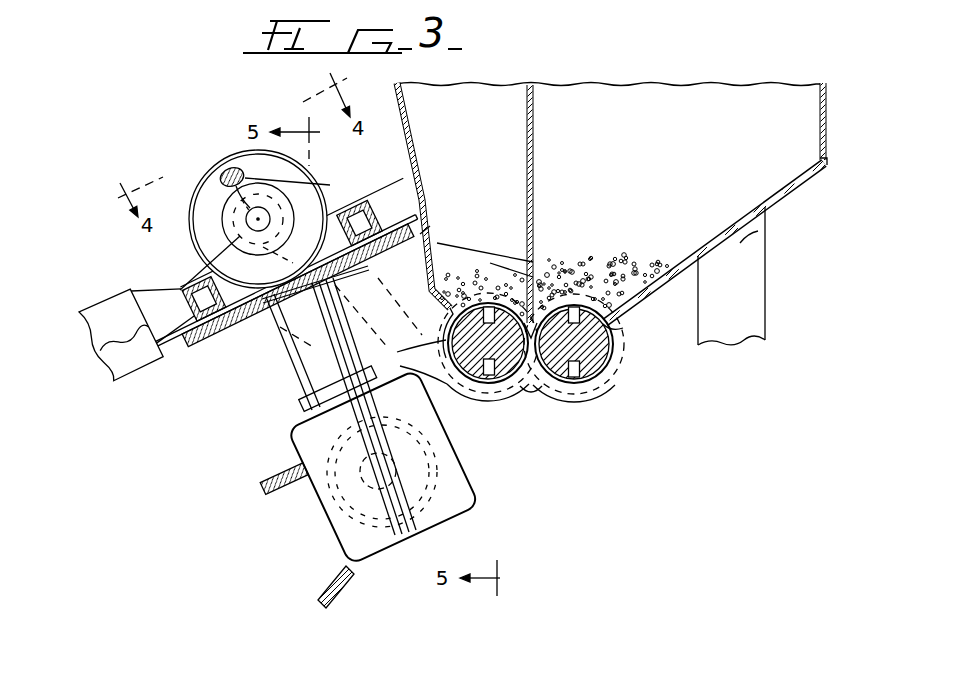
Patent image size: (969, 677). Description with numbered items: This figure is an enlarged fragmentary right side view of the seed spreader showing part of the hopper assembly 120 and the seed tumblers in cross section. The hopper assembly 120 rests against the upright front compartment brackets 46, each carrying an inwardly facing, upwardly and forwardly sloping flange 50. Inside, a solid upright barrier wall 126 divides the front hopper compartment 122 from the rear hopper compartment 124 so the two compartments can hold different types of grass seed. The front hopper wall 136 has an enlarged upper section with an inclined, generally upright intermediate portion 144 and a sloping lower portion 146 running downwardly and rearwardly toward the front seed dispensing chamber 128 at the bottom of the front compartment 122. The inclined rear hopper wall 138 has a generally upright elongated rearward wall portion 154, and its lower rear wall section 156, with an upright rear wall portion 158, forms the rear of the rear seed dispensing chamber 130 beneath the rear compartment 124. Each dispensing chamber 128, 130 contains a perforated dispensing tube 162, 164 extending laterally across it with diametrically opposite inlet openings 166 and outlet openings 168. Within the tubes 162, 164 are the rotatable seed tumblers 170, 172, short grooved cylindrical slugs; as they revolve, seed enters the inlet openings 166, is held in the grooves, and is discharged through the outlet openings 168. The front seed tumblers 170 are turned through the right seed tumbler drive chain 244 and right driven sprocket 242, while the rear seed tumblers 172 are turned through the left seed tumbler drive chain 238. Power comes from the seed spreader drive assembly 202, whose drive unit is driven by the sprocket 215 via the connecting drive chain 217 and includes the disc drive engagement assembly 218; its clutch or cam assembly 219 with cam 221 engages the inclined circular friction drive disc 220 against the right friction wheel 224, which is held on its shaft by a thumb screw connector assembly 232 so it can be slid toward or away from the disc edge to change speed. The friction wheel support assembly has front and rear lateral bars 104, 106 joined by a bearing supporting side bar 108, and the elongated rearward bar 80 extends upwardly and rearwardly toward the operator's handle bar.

The front hopper compartment 122 is at (586, 95).
The rear hopper compartment 124 is at (466, 96).
The rear hopper wall 138 is at (406, 161).
The barrier wall 126 is at (540, 167).
The intermediate portion 144 is at (819, 118).
The front hopper wall 136 is at (828, 164).
The hopper assembly 120 is at (806, 175).
The flange 50 is at (745, 238).
The front compartment bracket 46 is at (767, 283).
The sloping lower portion 146 is at (684, 264).
The inlet openings 166 is at (572, 306).
The rearward wall portion 154 is at (430, 226).
The right seed tumbler drive chain 244 is at (462, 251).
The lower rear wall section 156 is at (493, 264).
The upright rear wall portion 158 is at (440, 307).
The front seed dispensing chamber 128 is at (425, 340).
The rear seed tumbler 172 is at (463, 396).
The dispensing tube 164 is at (515, 397).
The outlet openings 168 is at (573, 385).
The front seed tumbler 170 is at (620, 348).
The dispensing tube 162 is at (616, 381).
The rear seed dispensing chamber 130 is at (630, 324).
The friction drive disc 220 is at (187, 350).
The front lateral bar 104 is at (100, 350).
The elongated rearward bar 80 is at (80, 330).
The bearing supporting side bar 108 is at (157, 303).
The rear lateral bar 106 is at (362, 213).
The left seed tumbler drive chain 238 is at (357, 318).
The cam 221 is at (262, 325).
The clutch or cam assembly 219 is at (287, 400).
The seed spreader drive assembly 202 is at (237, 360).
The disc drive engagement assembly 218 is at (478, 482).
The sprocket 215 is at (345, 520).
The connecting drive chain 217 is at (338, 600).
The right driven sprocket 242 is at (232, 235).
The right friction wheel 224 is at (207, 172).
The thumb screw connector assembly 232 is at (302, 190).